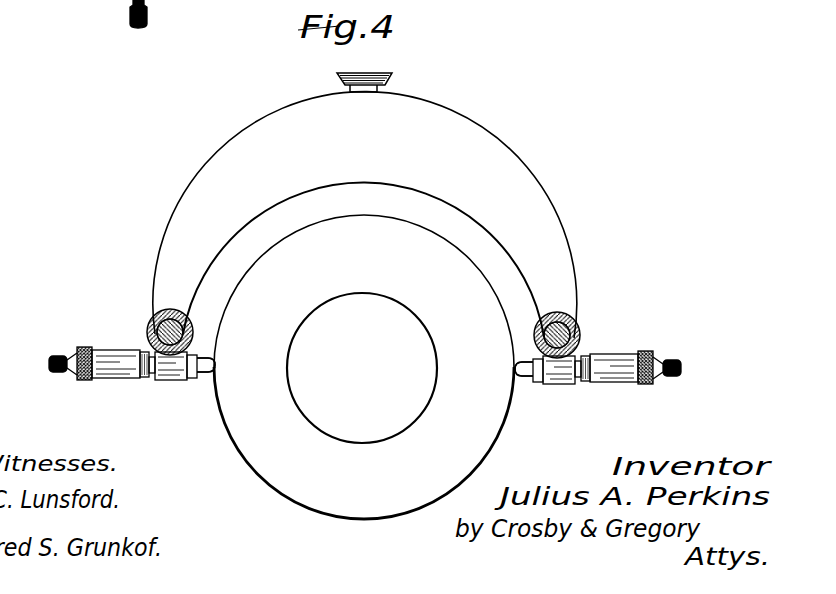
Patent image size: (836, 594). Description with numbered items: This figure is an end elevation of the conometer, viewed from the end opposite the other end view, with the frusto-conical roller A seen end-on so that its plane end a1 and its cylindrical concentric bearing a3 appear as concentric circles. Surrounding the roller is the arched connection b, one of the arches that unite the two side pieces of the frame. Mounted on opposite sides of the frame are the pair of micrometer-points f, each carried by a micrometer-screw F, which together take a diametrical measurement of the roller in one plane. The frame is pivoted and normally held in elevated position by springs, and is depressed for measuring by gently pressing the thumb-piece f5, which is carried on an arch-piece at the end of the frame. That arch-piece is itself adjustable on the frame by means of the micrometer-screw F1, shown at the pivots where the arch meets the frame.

The frusto-conical roller A is at (252, 449).
The plane end a1 is at (364, 291).
The cylindrical concentric bearing a3 is at (362, 368).
The arched connection b is at (365, 215).
The thumb-piece f5 is at (353, 72).
The micrometer-screw F is at (80, 347).
The micrometer-screw F1 is at (606, 294).
The micrometer-point f is at (215, 373).